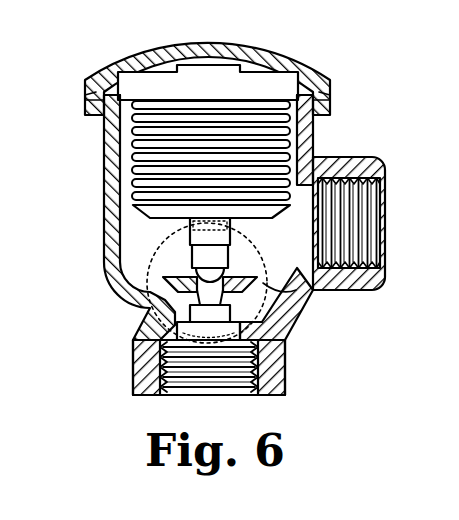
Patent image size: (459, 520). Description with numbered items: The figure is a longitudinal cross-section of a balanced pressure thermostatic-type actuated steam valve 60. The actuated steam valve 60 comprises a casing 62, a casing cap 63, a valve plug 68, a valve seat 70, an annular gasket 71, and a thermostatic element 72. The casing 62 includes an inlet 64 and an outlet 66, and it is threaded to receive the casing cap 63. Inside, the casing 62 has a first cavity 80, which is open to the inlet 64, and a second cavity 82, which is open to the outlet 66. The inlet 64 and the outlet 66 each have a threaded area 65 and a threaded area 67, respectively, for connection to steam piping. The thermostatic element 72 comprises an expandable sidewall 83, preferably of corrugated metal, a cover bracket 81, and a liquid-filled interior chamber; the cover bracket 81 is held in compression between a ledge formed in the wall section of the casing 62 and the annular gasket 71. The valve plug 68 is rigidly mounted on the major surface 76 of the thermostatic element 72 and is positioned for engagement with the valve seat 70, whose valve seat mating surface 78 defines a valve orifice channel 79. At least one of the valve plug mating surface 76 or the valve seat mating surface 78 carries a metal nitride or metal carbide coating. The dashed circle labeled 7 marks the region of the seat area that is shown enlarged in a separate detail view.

The actuated steam valve 60 is at (380, 73).
The casing 62 is at (311, 151).
The casing cap 63 is at (253, 56).
The inlet 64 is at (384, 201).
The threaded area 65 is at (372, 194).
The outlet 66 is at (241, 396).
The threaded area 67 is at (176, 387).
The valve plug 68 is at (200, 258).
The valve seat 70 is at (260, 314).
The annular gasket 71 is at (108, 76).
The thermostatic element 72 is at (128, 132).
The valve plug mating surface 76 is at (252, 216).
The valve seat mating surface 78 is at (290, 276).
The valve orifice channel 79 is at (198, 317).
The first cavity 80 is at (126, 216).
The cover bracket 81 is at (205, 72).
The second cavity 82 is at (278, 339).
The expandable sidewall 83 is at (135, 161).
The detail circle (FIG. 7) 7 is at (150, 269).